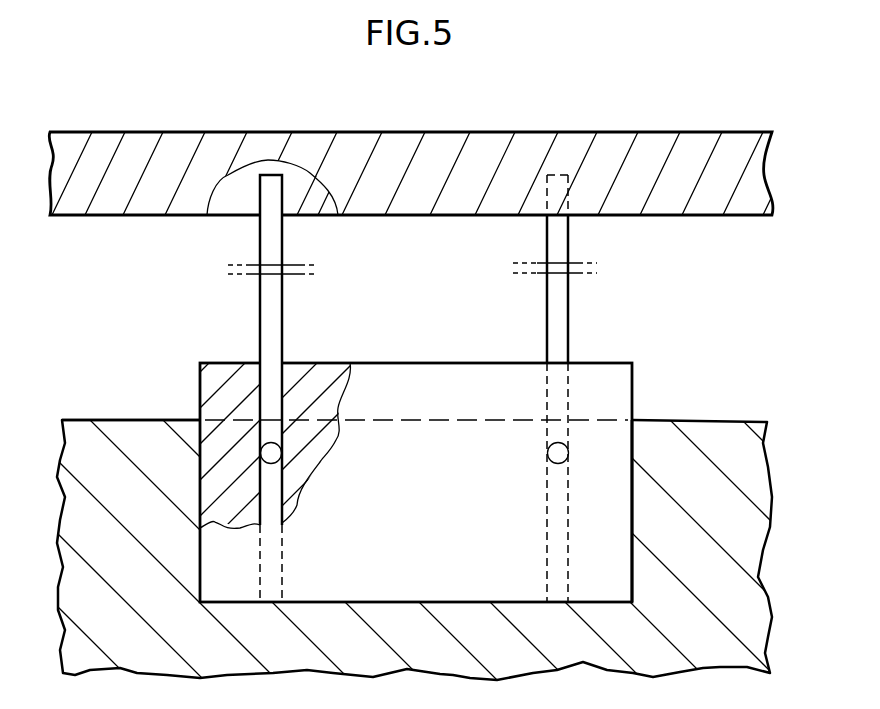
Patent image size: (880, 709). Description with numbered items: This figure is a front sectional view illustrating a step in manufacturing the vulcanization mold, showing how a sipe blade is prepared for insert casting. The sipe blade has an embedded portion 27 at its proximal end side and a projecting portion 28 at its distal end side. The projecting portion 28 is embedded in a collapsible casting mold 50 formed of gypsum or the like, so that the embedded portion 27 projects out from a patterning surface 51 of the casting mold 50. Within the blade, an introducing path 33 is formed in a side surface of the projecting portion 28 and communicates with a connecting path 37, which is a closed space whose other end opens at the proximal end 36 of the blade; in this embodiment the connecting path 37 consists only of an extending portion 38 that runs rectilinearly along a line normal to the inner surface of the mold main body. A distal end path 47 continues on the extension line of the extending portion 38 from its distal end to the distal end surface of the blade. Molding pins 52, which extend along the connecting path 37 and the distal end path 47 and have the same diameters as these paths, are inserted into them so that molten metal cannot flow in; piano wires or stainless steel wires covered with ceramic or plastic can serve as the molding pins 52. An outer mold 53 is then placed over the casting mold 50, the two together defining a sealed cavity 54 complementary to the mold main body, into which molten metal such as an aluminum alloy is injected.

The embedded portion 27 is at (633, 364).
The projecting portion 28 is at (459, 392).
The introducing path 33 is at (548, 453).
The proximal end 36 is at (362, 363).
The connecting path 37 is at (259, 385).
The extending portion 38 is at (280, 360).
The distal end path 47 is at (278, 499).
The casting mold 50 is at (718, 433).
The patterning surface 51 is at (88, 420).
The molding pin 52 is at (260, 288).
The outer mold 53 is at (717, 198).
The cavity 54 is at (610, 302).